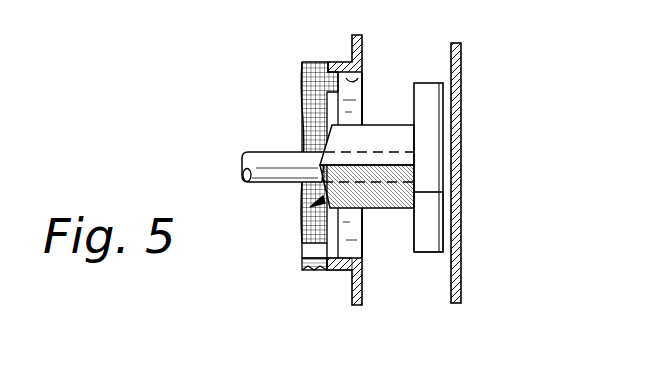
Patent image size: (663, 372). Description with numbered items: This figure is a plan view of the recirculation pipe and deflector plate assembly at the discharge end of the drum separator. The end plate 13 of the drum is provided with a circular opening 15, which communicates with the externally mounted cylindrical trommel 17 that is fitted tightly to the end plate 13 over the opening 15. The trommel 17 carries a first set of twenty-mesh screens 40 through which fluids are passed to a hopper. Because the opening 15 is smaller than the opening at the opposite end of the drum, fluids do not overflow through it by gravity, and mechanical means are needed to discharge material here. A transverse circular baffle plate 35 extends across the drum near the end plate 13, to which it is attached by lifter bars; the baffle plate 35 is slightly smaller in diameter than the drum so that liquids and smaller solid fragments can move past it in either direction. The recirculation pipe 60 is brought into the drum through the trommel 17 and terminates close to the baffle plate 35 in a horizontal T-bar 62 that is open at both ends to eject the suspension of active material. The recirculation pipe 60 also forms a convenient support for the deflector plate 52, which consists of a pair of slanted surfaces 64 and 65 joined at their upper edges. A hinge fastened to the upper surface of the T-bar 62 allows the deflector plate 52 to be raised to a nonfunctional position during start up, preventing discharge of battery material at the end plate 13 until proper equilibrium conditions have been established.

The end plate 13 is at (352, 46).
The circular opening 15 is at (346, 78).
The trommel 17 is at (330, 272).
The baffle plate 35 is at (458, 65).
The screens 40 is at (320, 103).
The deflector plate 52 is at (316, 201).
The recirculation pipe 60 is at (270, 160).
The T-bar 62 is at (436, 98).
The slanted surface 64 is at (402, 138).
The slanted surface 65 is at (403, 198).